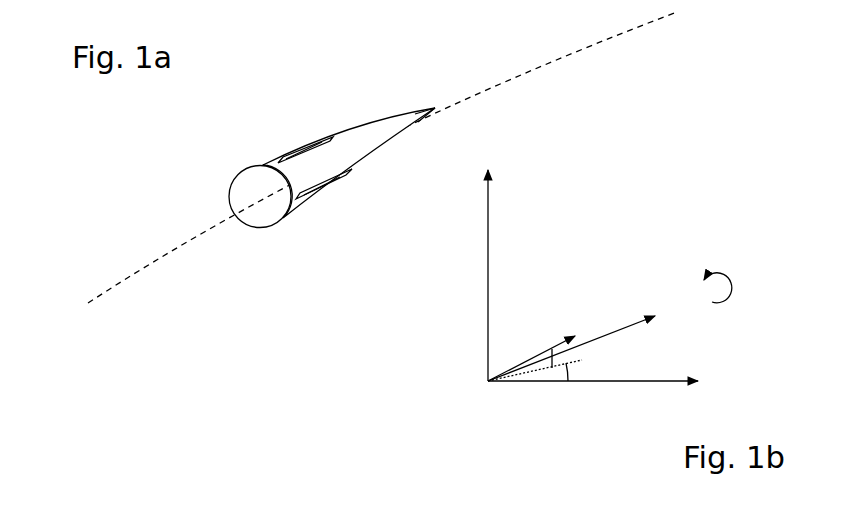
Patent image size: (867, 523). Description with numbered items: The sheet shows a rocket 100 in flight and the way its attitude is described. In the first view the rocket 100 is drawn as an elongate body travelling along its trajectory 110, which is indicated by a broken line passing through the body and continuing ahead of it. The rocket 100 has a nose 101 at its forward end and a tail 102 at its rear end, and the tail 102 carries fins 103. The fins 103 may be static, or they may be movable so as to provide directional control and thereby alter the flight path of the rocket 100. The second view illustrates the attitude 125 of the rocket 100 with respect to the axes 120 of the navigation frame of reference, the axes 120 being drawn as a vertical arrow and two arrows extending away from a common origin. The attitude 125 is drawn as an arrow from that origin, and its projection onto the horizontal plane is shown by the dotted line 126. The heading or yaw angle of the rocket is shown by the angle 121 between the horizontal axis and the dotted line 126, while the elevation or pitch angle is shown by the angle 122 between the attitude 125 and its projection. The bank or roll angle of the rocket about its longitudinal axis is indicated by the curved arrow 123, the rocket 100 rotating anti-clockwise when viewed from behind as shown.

In FIG. 1a, the rocket 100 is at (357, 130).
In FIG. 1a, the nose 101 is at (421, 110).
In FIG. 1a, the tail 102 is at (263, 227).
In FIG. 1a, the fins 103 is at (284, 158).
In FIG. 1a, the trajectory 110 is at (577, 47).
In FIG. 1b, the axes 120 is at (488, 183).
In FIG. 1b, the angle 121 is at (568, 388).
In FIG. 1b, the angle 122 is at (556, 346).
In FIG. 1b, the arrow 123 is at (728, 283).
In FIG. 1b, the attitude 125 is at (572, 336).
In FIG. 1b, the dotted line 126 is at (580, 360).